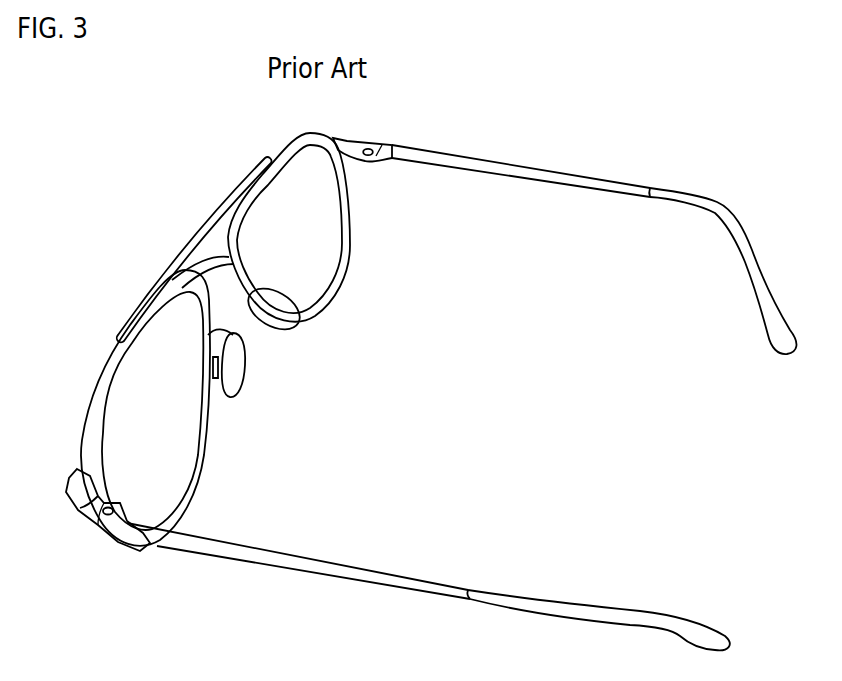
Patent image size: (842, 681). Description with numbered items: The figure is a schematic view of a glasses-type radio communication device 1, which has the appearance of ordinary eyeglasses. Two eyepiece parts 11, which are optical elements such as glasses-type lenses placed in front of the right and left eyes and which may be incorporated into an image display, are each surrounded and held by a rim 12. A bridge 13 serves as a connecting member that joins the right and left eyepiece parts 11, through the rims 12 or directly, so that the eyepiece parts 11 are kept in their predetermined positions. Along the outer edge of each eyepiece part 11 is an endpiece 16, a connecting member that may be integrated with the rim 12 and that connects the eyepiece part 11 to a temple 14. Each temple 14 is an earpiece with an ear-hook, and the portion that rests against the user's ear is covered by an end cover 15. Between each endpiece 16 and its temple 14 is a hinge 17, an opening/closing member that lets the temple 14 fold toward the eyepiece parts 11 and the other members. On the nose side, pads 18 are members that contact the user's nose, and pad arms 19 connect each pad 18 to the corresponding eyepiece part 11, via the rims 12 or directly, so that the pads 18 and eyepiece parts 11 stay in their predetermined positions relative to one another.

The glasses-type radio communication device 1 is at (689, 134).
The eyepiece parts 11 is at (139, 420).
The rims 12 is at (102, 375).
The bridge 13 is at (192, 235).
The temples 14 is at (363, 583).
The end covers 15 is at (736, 238).
The endpieces 16 is at (66, 500).
The hinges 17 is at (373, 160).
The pads 18 is at (290, 328).
The pad arms 19 is at (217, 357).